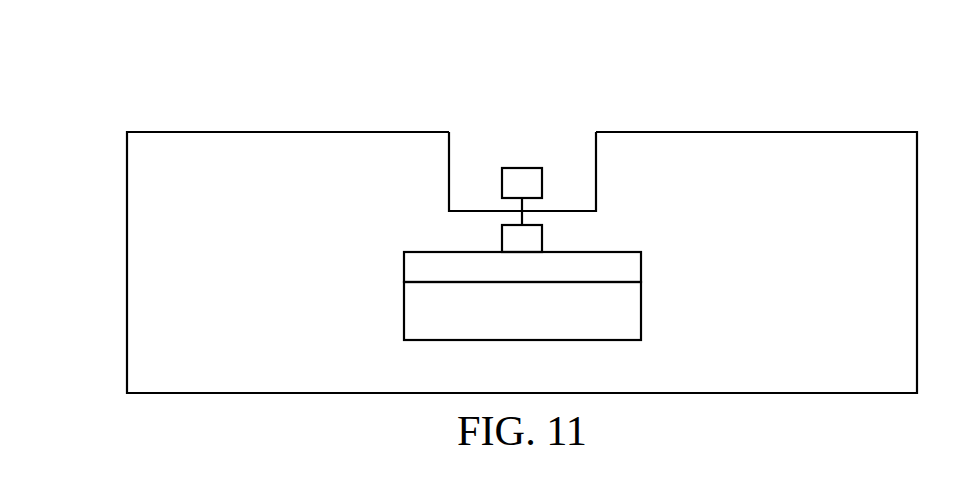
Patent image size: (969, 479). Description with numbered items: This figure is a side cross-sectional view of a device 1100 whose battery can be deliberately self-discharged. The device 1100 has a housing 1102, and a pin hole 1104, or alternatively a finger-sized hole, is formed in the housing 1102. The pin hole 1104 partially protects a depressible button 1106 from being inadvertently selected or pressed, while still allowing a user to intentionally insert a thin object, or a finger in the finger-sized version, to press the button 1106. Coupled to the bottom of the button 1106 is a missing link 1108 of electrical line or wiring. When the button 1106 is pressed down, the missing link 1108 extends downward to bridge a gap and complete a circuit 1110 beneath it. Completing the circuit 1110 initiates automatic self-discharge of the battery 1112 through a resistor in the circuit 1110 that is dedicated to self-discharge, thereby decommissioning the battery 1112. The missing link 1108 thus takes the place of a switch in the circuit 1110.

The device 1100 is at (186, 64).
The housing 1102 is at (242, 130).
The pin hole 1104 is at (469, 155).
The depressible button 1106 is at (522, 167).
The missing link 1108 is at (502, 240).
The circuit 1110 is at (404, 268).
The battery 1112 is at (404, 312).